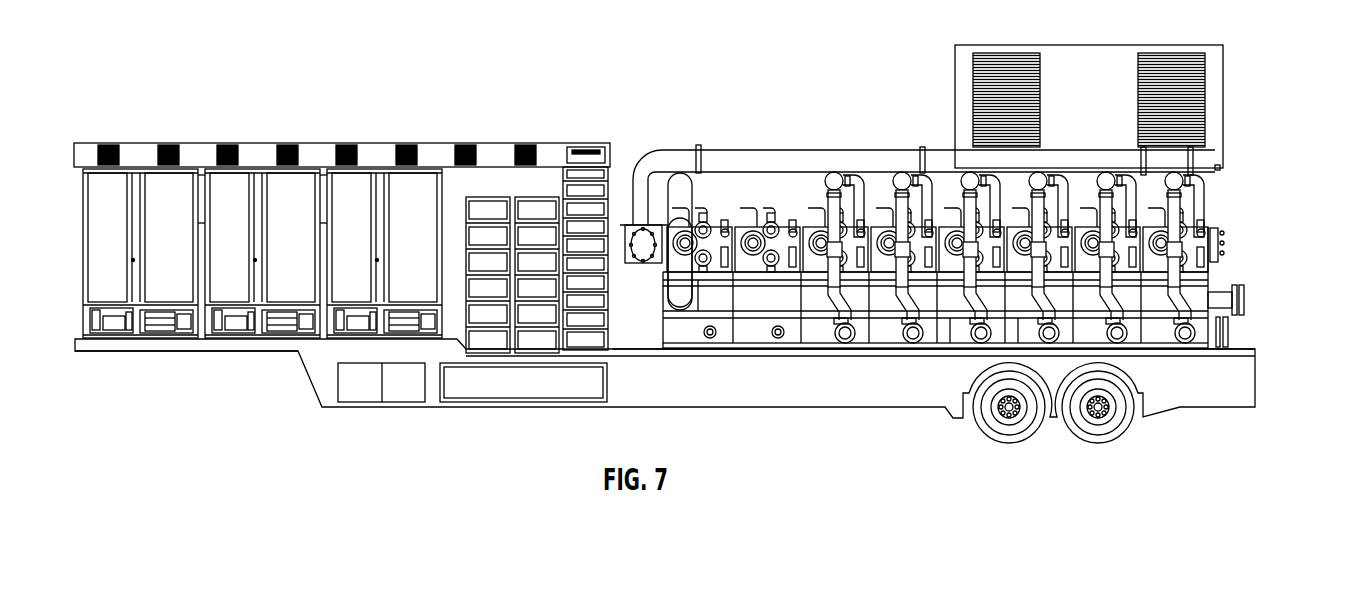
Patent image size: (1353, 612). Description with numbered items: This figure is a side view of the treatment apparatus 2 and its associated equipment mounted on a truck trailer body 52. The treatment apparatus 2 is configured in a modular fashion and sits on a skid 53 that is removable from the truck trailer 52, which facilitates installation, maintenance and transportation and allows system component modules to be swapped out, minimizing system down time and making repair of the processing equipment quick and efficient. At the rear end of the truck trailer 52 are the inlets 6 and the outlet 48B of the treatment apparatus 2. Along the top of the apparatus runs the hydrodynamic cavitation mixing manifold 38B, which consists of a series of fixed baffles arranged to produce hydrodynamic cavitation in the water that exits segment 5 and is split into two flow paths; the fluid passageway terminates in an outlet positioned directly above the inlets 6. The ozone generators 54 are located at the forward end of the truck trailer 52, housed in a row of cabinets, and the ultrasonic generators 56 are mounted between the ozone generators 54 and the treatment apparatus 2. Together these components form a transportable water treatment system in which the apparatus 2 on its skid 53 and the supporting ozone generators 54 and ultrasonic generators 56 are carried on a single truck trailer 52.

The treatment apparatus 2 is at (961, 196).
The segment 5 is at (653, 262).
The inlets 6 is at (1233, 333).
The hydrodynamic cavitation mixing manifold 38B is at (753, 158).
The outlet 48B is at (1243, 300).
The truck trailer body 52 is at (1212, 375).
The skid 53 is at (1238, 350).
The ozone generators 54 is at (170, 193).
The ultrasonic generators 56 is at (492, 197).